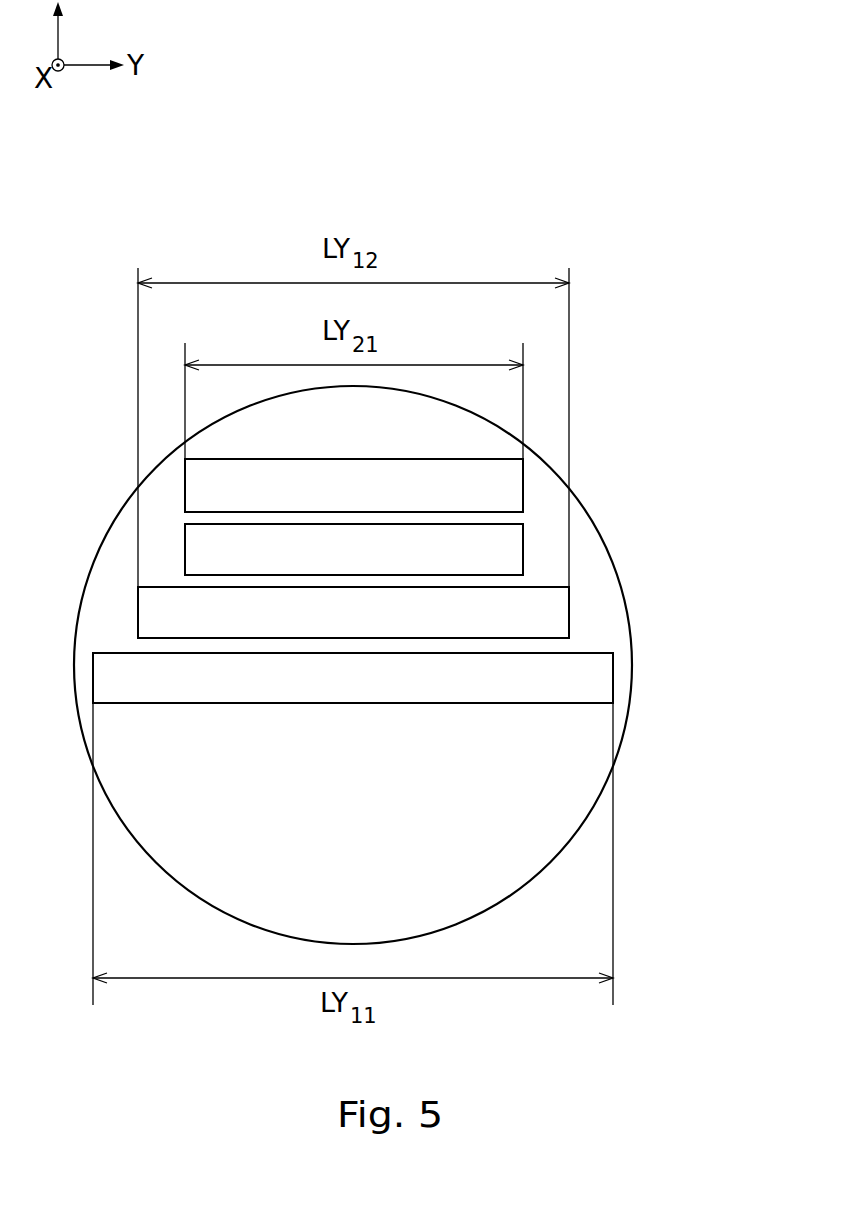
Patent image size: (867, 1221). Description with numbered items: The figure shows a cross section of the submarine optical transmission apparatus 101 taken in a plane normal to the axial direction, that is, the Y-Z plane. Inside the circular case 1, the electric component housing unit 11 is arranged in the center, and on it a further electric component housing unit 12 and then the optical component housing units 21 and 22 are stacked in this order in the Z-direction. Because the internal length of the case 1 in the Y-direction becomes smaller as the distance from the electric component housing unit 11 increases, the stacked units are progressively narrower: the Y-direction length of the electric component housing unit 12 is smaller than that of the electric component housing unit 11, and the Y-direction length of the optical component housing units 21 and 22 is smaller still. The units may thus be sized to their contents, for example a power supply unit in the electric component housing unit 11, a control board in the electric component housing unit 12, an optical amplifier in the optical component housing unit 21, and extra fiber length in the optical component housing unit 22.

The submarine optical transmission apparatus 101 is at (351, 128).
The case 1 is at (97, 556).
The electric component housing unit 11 is at (613, 673).
The electric component housing unit 12 is at (569, 612).
The optical component housing unit 21 is at (523, 552).
The optical component housing unit 22 is at (523, 497).